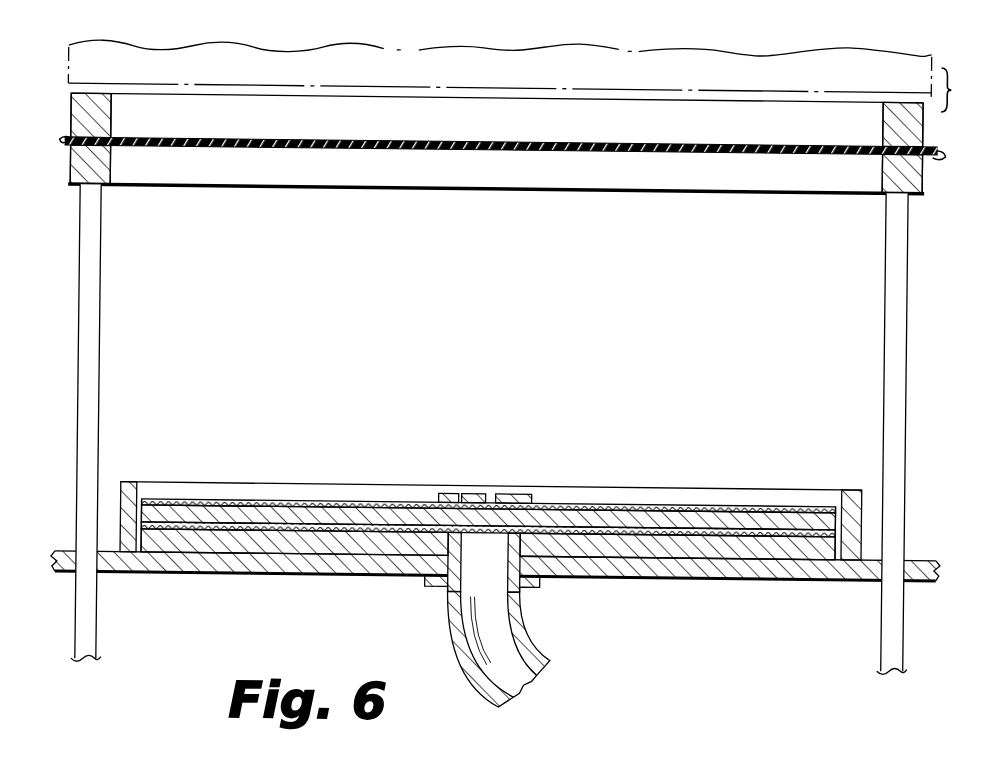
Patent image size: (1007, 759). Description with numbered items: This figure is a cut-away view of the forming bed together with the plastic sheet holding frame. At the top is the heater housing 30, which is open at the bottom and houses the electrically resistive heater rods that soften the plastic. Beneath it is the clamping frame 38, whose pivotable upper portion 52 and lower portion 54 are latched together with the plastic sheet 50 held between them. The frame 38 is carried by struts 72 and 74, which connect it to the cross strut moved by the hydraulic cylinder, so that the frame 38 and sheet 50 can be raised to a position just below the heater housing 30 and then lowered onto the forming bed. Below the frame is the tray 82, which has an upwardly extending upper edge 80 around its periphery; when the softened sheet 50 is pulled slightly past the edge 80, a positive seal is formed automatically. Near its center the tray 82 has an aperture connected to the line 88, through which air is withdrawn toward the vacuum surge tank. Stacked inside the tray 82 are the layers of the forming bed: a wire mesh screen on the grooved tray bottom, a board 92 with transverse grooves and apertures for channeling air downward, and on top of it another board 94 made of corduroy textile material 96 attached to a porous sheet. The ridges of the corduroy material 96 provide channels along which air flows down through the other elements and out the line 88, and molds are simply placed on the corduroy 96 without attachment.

The heater housing 30 is at (612, 71).
The frame 38 is at (116, 193).
The plastic sheet 50 is at (516, 141).
The upper portion of frame 52 is at (880, 118).
The lower portion of frame 54 is at (882, 171).
The strut 72 is at (88, 306).
The strut 74 is at (884, 317).
The upper edge of tray 80 is at (131, 490).
The tray 82 is at (219, 548).
The line 88 is at (515, 640).
The board 92 is at (400, 518).
The board 94 is at (595, 505).
The corduroy textile material 96 is at (321, 529).